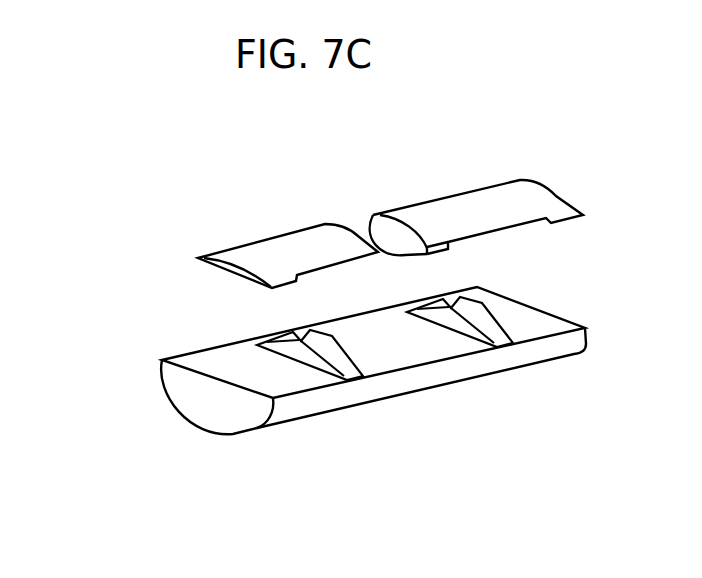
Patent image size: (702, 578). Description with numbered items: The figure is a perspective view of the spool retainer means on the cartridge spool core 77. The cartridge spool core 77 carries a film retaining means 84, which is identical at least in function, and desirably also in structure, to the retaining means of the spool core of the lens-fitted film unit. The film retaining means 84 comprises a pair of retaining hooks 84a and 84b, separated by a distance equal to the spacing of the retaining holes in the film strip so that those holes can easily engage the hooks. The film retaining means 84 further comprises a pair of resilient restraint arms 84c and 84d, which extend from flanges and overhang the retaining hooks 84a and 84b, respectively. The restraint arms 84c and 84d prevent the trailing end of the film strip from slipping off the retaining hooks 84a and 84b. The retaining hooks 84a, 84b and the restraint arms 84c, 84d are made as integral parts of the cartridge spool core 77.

The cartridge spool core 77 is at (502, 367).
The film retaining means 84 is at (330, 220).
The retaining hook 84a is at (287, 342).
The retaining hook 84b is at (491, 318).
The resilient restraint arm 84c is at (258, 242).
The resilient restraint arm 84d is at (438, 195).